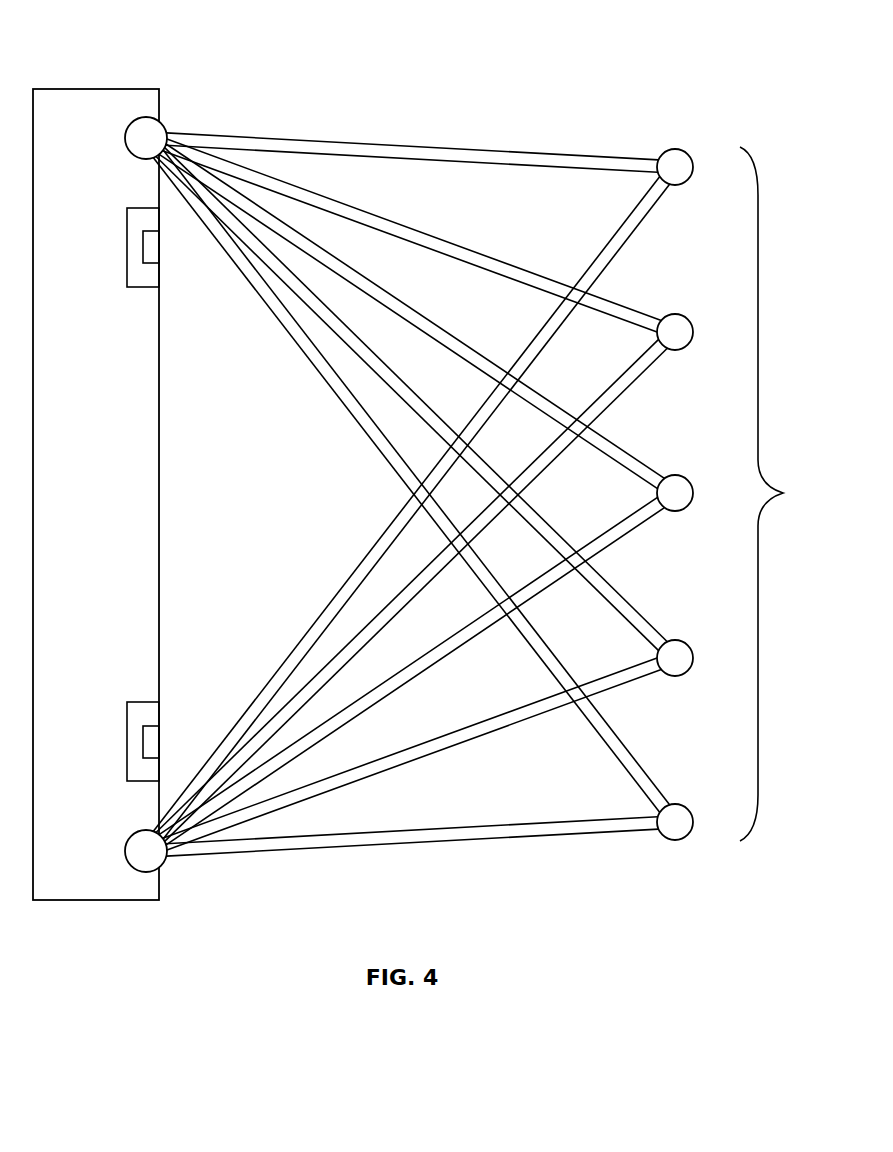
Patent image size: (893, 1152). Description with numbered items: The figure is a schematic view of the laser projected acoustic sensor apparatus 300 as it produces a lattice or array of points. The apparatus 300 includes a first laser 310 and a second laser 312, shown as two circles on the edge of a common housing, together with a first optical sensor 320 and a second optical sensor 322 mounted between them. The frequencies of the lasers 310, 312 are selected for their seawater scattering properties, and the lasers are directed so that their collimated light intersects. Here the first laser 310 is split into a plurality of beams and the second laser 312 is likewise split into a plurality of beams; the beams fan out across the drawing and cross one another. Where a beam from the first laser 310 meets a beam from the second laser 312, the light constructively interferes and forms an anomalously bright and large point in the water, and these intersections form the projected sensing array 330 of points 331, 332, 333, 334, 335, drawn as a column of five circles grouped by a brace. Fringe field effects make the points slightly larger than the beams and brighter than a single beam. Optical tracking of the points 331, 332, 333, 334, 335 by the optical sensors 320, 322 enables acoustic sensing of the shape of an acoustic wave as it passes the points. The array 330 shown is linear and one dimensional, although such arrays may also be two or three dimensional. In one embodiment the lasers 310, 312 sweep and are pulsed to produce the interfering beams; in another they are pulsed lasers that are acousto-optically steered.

The laser projected acoustic sensor apparatus 300 is at (122, 42).
The first laser 310 is at (164, 124).
The second laser 312 is at (165, 864).
The first optical sensor 320 is at (152, 252).
The second optical sensor 322 is at (150, 713).
The array of intersection points 330 is at (785, 494).
The point 331 is at (673, 146).
The point 332 is at (673, 311).
The point 333 is at (673, 472).
The point 334 is at (673, 637).
The point 335 is at (673, 801).